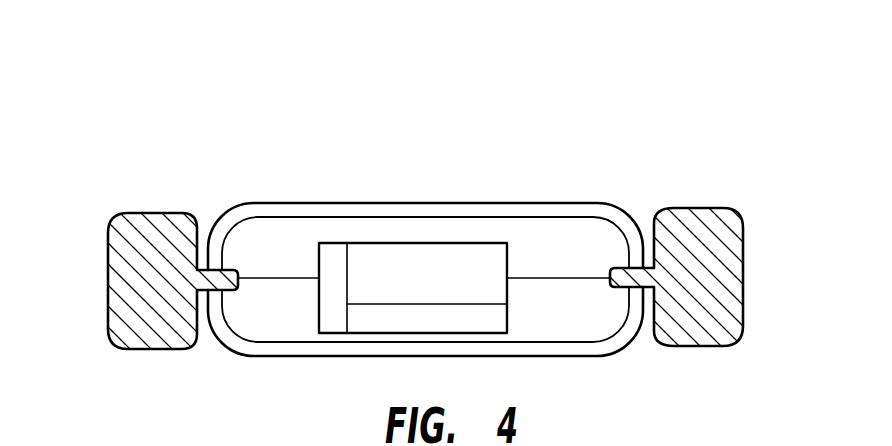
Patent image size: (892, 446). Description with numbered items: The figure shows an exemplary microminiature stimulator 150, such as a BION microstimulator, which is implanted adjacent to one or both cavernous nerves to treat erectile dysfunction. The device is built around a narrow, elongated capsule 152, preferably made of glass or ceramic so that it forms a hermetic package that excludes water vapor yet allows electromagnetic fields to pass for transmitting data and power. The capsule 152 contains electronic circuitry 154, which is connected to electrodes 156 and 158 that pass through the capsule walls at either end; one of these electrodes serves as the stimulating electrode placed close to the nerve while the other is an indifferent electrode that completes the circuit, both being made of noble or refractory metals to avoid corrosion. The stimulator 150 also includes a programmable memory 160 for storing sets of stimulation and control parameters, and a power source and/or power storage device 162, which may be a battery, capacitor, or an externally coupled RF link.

The microminiature stimulator 150 is at (151, 165).
The capsule 152 is at (540, 211).
The electronic circuitry 154 is at (473, 243).
The electrode 156 is at (130, 279).
The electrode 158 is at (728, 279).
The programmable memory 160 is at (333, 243).
The power source and/or power storage device 162 is at (507, 321).